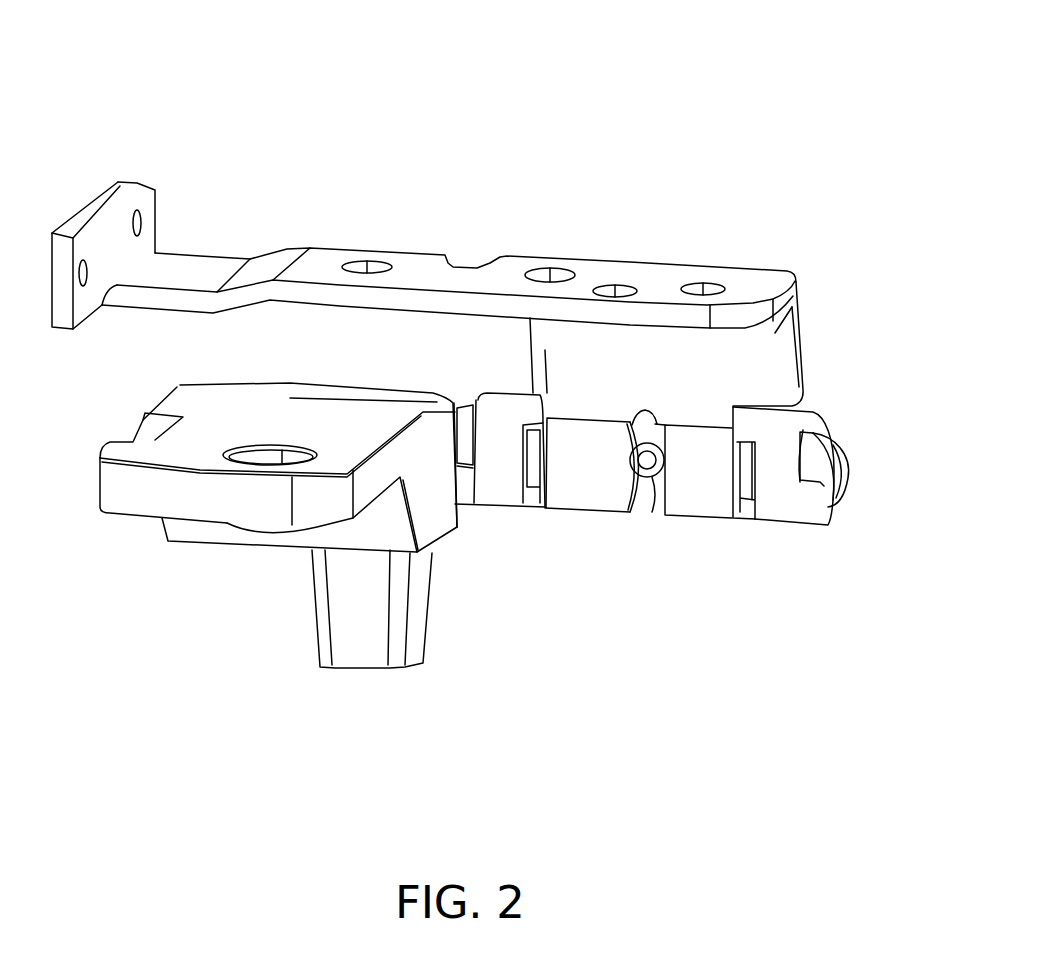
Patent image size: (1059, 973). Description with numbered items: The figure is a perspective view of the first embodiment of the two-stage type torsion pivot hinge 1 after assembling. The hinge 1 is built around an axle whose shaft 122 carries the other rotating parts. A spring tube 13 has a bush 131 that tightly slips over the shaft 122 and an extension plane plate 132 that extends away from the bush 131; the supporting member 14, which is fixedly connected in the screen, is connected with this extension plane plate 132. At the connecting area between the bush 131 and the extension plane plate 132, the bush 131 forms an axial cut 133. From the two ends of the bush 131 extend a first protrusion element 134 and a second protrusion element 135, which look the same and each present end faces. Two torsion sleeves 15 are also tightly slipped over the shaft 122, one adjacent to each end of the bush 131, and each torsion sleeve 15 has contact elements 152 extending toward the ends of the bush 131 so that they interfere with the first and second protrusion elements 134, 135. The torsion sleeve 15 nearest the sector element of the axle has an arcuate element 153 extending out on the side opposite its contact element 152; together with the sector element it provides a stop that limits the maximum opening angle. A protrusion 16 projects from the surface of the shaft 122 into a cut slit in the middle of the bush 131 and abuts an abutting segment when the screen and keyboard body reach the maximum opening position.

The two-stage type torsion pivot hinge 1 is at (660, 170).
The spring tube 13 is at (652, 512).
The supporting member 14 is at (575, 257).
The torsion sleeve 15 is at (498, 492).
The protrusion 16 is at (655, 490).
The shaft 122 is at (833, 525).
The bush 131 is at (590, 495).
The extension plane plate 132 is at (777, 335).
The axial cut 133 is at (697, 417).
The first protrusion element 134 is at (540, 506).
The second protrusion element 135 is at (753, 512).
The contact element 152 is at (530, 392).
The arcuate element 153 is at (454, 500).